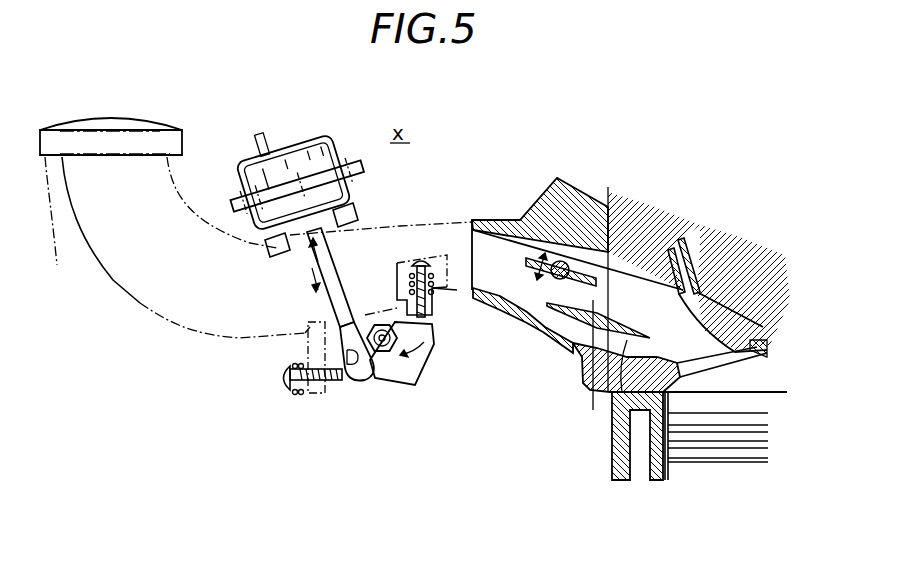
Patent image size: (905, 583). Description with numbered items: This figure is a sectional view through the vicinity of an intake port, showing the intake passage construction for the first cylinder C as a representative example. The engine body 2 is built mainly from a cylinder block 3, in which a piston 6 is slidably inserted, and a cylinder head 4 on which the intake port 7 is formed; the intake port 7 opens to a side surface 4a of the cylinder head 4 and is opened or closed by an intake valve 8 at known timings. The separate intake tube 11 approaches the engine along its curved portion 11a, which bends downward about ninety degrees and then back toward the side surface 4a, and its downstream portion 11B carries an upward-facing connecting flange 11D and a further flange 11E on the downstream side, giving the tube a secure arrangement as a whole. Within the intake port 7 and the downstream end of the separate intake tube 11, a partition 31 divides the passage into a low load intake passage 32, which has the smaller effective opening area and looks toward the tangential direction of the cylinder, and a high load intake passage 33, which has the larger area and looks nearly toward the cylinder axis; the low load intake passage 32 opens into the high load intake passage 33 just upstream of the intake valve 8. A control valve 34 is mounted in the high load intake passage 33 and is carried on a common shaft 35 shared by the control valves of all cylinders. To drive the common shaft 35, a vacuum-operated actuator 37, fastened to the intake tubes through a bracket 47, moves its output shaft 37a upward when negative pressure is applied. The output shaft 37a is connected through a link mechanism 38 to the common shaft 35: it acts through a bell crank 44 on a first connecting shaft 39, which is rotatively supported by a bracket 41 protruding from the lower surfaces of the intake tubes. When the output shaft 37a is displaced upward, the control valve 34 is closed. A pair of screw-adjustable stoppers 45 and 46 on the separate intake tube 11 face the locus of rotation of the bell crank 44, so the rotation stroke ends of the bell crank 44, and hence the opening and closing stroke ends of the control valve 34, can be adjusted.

The engine body 2 is at (593, 445).
The cylinder block 3 is at (617, 462).
The cylinder head 4 is at (700, 250).
The side surface of the cylinder head 4a is at (602, 187).
The piston 6 is at (725, 467).
The intake port 7 is at (730, 330).
The intake valve 8 is at (702, 327).
The separate intake tube 11 is at (488, 217).
The curved portion 11a is at (88, 264).
The downstream portion 11B is at (500, 305).
The connecting flange 11D is at (156, 191).
The flange 11E is at (592, 388).
The partition 31 is at (586, 367).
The low load intake passage 32 is at (572, 333).
The high load intake passage 33 is at (633, 287).
The control valve 34 is at (583, 267).
The common shaft 35 is at (560, 262).
The actuator 37 is at (328, 133).
The output shaft 37a is at (332, 268).
The link mechanism 38 is at (443, 387).
The first connecting shaft 39 is at (387, 357).
The bracket 41 is at (395, 313).
The bell crank 44 is at (423, 347).
The stopper 45 is at (437, 315).
The stopper 46 is at (345, 393).
The bracket 47 is at (300, 258).
The cylinder C is at (680, 468).